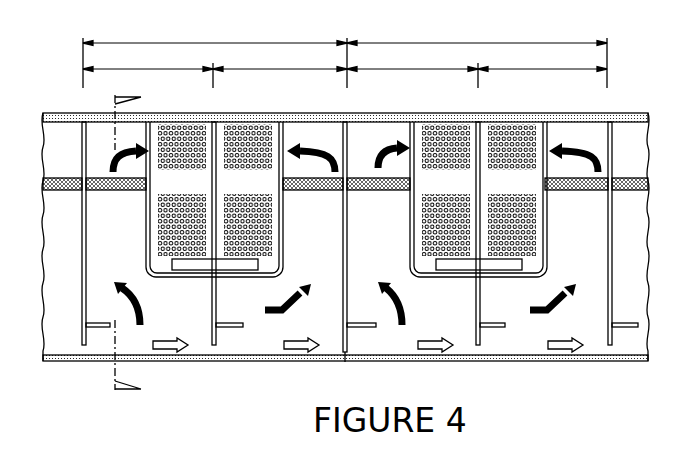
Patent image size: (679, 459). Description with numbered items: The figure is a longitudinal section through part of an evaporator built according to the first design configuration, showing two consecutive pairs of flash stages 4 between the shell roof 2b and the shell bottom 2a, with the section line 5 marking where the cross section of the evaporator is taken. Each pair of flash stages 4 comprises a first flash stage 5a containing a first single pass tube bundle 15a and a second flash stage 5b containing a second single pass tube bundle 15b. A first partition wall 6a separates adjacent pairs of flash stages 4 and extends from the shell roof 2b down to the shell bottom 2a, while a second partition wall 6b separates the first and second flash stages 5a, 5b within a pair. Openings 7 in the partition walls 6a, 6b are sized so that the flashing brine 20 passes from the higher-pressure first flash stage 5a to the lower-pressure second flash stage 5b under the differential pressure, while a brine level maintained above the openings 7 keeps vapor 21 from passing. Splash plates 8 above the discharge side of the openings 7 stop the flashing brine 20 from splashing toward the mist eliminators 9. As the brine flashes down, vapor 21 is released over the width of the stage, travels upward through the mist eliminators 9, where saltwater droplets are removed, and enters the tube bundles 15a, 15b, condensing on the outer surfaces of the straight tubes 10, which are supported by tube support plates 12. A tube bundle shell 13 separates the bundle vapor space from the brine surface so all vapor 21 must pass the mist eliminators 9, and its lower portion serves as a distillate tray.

The shell bottom 2a is at (470, 362).
The shell roof 2b is at (576, 117).
The pair of flash stages 4 is at (205, 43).
The section line 5- 5 is at (128, 247).
The first flash stage 5a is at (168, 67).
The second flash stage 5b is at (278, 67).
The first partition wall 6a is at (82, 313).
The second partition wall 6b is at (212, 302).
The opening 7 is at (215, 347).
The splash plate 8 is at (246, 325).
The mist eliminator 9 is at (126, 187).
The straight tube 10 is at (272, 137).
The tube support plate 12 is at (395, 126).
The tube bundle shell 13 is at (147, 246).
The first single pass tube bundle 15a is at (206, 190).
The second single pass tube bundle 15b is at (272, 190).
The flashing brine 20 is at (306, 361).
The vapor 21 is at (280, 312).